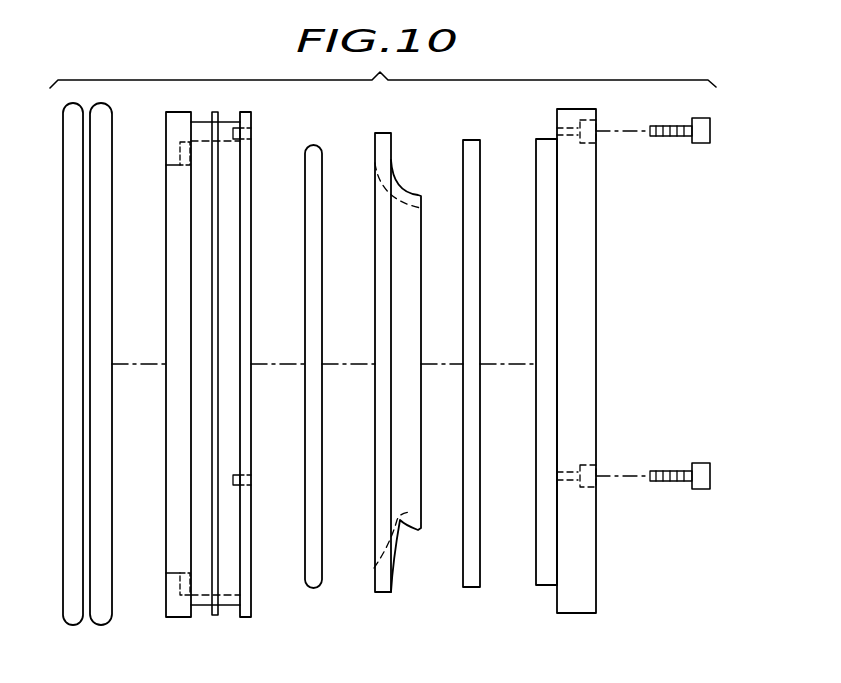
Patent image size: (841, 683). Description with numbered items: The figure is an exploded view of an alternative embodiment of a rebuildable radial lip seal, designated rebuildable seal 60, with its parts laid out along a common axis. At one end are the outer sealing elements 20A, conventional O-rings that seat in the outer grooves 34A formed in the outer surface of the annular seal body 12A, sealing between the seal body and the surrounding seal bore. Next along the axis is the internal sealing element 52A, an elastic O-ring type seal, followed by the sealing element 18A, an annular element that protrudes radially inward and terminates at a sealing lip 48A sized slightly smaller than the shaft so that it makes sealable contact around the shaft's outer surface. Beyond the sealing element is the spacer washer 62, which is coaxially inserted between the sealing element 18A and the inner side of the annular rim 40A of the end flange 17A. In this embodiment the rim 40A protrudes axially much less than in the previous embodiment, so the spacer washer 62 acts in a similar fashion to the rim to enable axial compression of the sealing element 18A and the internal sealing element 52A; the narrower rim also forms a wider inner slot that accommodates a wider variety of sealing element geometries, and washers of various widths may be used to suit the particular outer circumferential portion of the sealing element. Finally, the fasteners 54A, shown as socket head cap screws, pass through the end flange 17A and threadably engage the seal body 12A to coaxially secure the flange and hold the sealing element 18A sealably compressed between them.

The rebuildable seal 60 is at (384, 72).
The outer sealing element 20A is at (107, 628).
The seal body 12A is at (166, 595).
The outer groove 34A is at (232, 607).
The internal sealing element 52A is at (311, 590).
The sealing element 18A is at (392, 588).
The sealing lip 48A is at (400, 522).
The spacer washer 62 is at (463, 566).
The annular rim 40A is at (543, 587).
The end flange 17A is at (597, 565).
The fasteners 54A is at (655, 137).